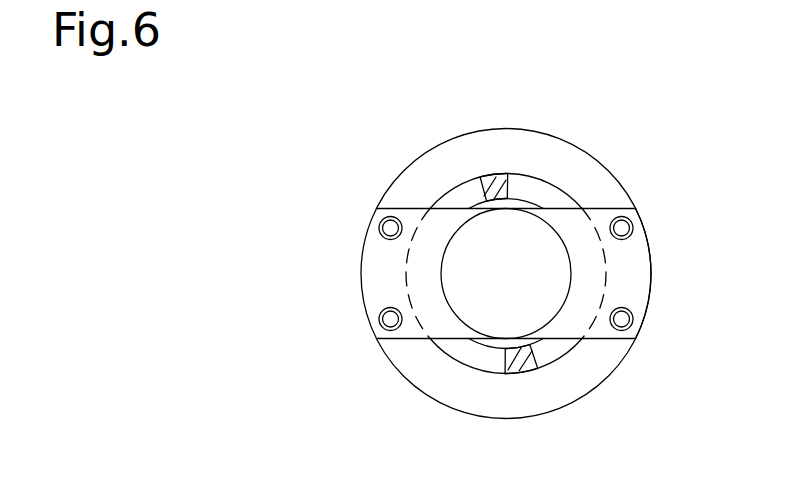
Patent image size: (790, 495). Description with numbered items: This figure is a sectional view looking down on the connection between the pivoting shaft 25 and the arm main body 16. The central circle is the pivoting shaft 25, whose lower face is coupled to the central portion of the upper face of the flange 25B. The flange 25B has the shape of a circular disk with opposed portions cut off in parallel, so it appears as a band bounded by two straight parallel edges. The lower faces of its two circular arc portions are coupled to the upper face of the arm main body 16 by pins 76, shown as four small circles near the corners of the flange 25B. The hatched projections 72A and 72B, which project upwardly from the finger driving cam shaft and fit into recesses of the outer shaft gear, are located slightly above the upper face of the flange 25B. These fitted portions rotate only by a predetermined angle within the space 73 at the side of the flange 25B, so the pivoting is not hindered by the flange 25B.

The arm main body 16 is at (625, 188).
The pivoting shaft 25 is at (470, 207).
The flange 25B is at (652, 271).
The space 73 is at (544, 197).
The projection 72A is at (490, 177).
The projection 72B is at (522, 373).
The pins 76 is at (380, 229).